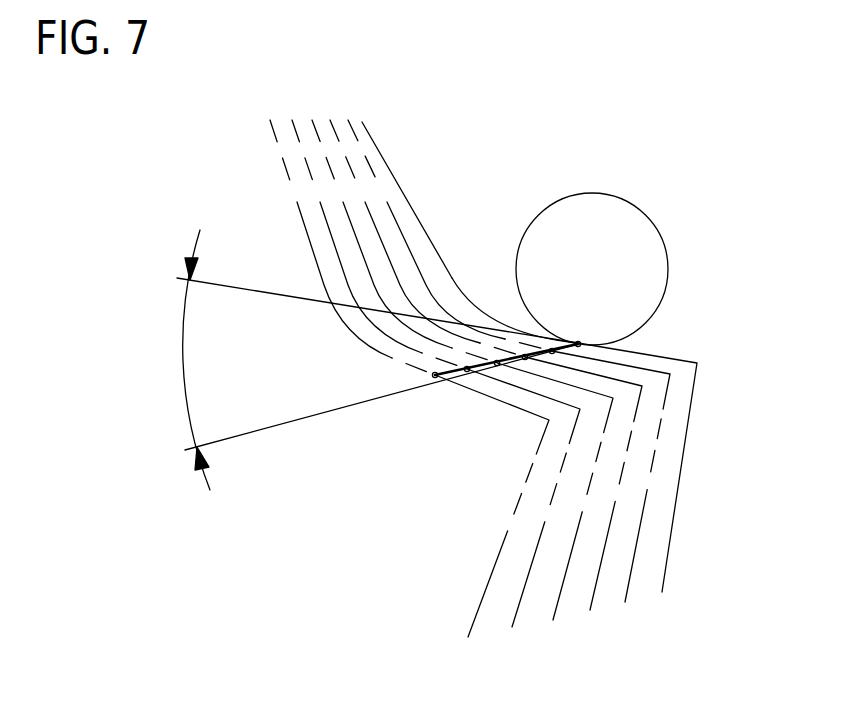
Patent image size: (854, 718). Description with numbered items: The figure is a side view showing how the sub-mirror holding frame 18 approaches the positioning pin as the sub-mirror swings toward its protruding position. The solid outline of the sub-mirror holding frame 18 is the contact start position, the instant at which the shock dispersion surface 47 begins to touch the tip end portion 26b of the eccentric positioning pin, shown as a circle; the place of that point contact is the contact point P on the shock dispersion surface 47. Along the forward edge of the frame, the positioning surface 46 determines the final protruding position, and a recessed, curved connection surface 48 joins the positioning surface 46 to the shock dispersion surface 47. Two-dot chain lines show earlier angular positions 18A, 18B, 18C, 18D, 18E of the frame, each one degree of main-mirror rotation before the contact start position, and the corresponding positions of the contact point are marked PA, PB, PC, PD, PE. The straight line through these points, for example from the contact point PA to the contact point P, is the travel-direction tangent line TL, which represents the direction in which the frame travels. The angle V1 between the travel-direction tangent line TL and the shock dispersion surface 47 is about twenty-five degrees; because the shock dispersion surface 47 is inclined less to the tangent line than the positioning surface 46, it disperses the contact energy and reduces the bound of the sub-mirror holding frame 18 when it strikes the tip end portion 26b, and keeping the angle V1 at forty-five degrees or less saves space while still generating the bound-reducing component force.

The sub-mirror holding frame 18 is at (430, 233).
The angular position of the sub-mirror holding frame 18A is at (350, 122).
The angular position of the sub-mirror holding frame 18B is at (332, 122).
The angular position of the sub-mirror holding frame 18C is at (313, 122).
The angular position of the sub-mirror holding frame 18D is at (290, 118).
The angular position of the sub-mirror holding frame 18E is at (270, 119).
The positioning surface 46 is at (407, 200).
The shock dispersion surface 47 is at (652, 357).
The connection surface 48 is at (490, 318).
The tip end portion 26b is at (615, 225).
The contact point P is at (578, 341).
The contact point PA is at (552, 347).
The contact point PB is at (525, 360).
The contact point PC is at (496, 366).
The contact point PD is at (466, 372).
The contact point PE is at (434, 378).
The travel-direction tangent line TL is at (562, 334).
The angle V1 is at (360, 360).